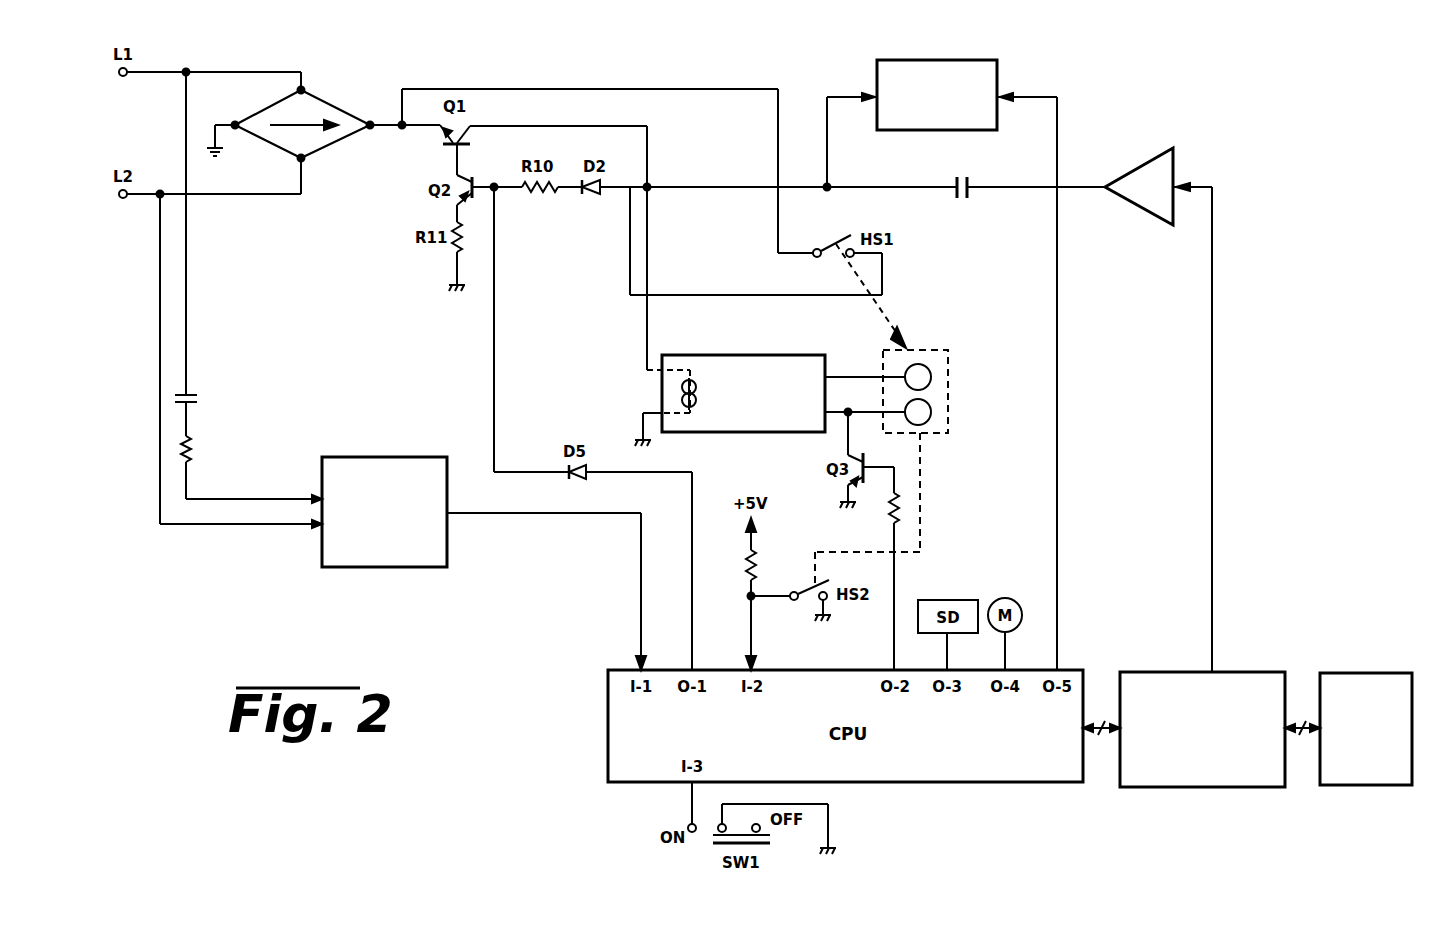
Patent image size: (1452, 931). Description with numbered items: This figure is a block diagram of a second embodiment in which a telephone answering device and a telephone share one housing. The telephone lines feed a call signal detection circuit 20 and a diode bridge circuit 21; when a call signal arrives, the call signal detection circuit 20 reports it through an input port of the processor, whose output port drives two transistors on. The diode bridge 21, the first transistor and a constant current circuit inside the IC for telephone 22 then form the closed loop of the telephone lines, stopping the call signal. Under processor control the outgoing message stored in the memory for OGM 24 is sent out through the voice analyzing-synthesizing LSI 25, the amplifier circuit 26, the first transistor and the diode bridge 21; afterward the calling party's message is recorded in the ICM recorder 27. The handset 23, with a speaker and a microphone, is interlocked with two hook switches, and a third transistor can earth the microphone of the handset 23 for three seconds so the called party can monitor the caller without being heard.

The call signal detection circuit 20 is at (396, 468).
The diode bridge circuit 21 is at (330, 110).
The IC for telephone 22 is at (771, 362).
The handset 23 is at (948, 377).
The memory for OGM 24 is at (1375, 777).
The voice analyzing-synthesizing LSI 25 is at (1210, 780).
The amplifier circuit 26 is at (1168, 167).
The ICM recorder 27 is at (983, 69).